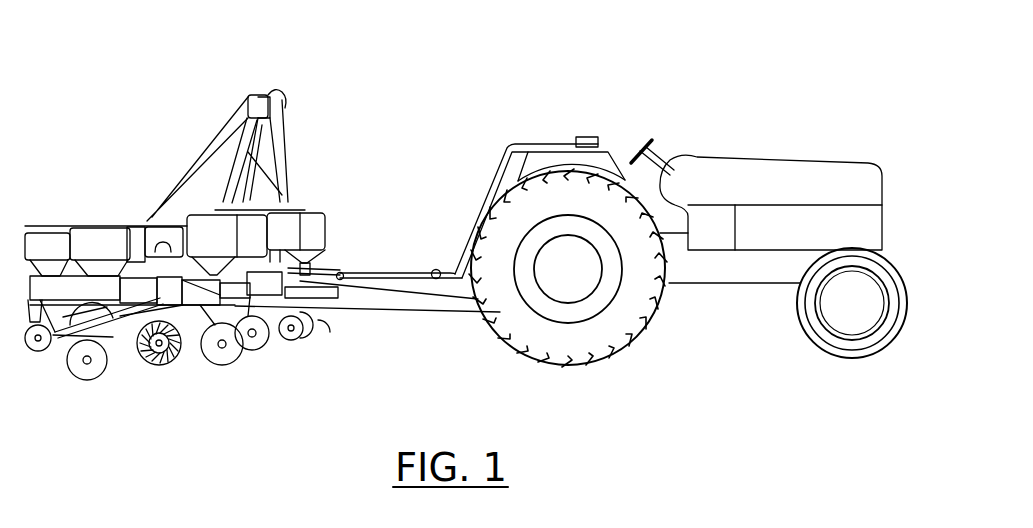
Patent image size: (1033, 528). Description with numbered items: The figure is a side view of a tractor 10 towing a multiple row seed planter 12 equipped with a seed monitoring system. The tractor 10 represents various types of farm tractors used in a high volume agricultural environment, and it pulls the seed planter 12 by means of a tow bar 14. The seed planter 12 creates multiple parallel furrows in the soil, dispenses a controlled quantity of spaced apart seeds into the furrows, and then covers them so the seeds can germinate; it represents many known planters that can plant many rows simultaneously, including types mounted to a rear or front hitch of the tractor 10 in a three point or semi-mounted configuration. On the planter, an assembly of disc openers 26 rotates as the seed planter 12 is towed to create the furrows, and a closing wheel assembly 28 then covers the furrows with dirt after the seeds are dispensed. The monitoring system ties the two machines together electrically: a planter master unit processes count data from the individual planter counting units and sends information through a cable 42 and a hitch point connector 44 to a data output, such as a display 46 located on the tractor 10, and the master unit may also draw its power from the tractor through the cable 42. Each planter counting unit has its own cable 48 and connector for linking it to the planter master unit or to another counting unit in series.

The tractor 10 is at (665, 92).
The seed planter 12 is at (134, 132).
The tow bar 14 is at (367, 302).
The disc openers 26 is at (235, 362).
The closing wheel assembly 28 is at (166, 366).
The cable 42 is at (338, 270).
The hitch point connector 44 is at (438, 266).
The display 46 is at (586, 137).
The cable 48 is at (345, 268).